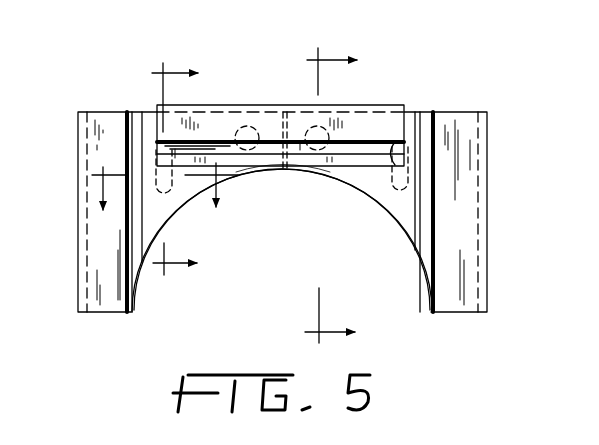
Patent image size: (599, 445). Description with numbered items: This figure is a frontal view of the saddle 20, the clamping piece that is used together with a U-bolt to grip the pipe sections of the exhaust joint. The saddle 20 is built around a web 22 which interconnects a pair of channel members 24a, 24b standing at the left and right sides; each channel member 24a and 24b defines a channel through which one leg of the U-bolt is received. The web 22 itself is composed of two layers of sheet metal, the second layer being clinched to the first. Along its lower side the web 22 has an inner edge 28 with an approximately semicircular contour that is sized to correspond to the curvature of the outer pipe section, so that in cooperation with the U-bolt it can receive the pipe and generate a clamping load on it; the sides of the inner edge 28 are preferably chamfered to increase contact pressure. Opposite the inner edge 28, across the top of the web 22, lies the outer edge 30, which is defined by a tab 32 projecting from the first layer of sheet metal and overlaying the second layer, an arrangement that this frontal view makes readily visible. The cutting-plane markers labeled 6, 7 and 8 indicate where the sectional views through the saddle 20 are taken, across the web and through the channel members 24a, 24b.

The saddle 20 is at (286, 166).
The web 22 is at (373, 183).
The channel member 24a is at (467, 162).
The channel member 24b is at (85, 148).
The inner edge 28 is at (253, 176).
The outer edge 30 is at (247, 105).
The tab 32 is at (375, 128).
The section line 6- 6 is at (340, 196).
The section line 7- 7 is at (165, 199).
The section line 8- 8 is at (184, 170).